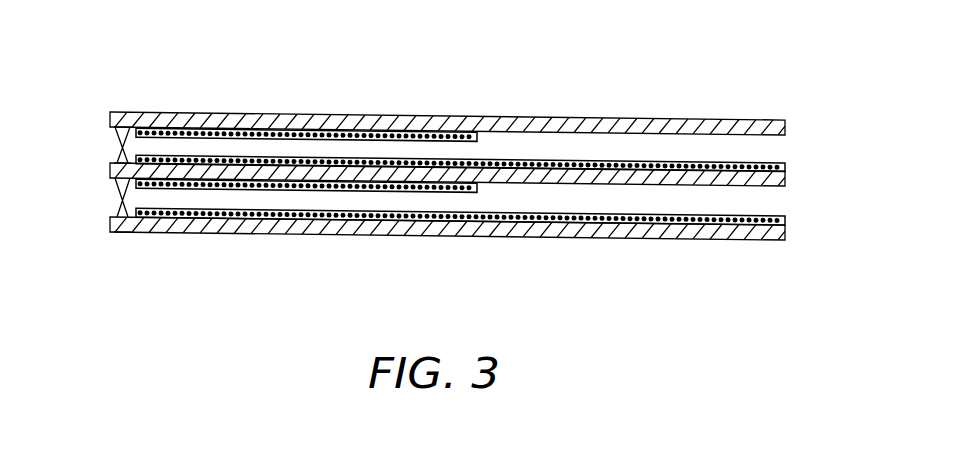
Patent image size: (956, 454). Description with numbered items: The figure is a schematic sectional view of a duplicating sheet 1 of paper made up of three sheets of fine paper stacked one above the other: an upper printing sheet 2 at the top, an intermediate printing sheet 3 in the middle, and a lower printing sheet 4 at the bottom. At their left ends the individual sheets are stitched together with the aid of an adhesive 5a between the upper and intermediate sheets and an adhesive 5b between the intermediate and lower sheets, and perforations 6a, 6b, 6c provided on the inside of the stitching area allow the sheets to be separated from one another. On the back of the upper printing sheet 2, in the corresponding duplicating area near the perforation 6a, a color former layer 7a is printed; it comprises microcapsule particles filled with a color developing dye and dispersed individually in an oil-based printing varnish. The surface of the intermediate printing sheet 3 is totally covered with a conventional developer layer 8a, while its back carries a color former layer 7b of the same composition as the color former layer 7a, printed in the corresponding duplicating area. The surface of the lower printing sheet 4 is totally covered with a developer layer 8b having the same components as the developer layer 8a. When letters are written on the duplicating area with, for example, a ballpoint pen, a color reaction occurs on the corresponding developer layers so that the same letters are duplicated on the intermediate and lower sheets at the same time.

The duplicating sheet 1 is at (327, 90).
The upper printing sheet 2 is at (398, 115).
The intermediate printing sheet 3 is at (567, 177).
The lower printing sheet 4 is at (455, 228).
The adhesive 5a is at (117, 138).
The adhesive 5b is at (117, 201).
The perforation 6a is at (127, 127).
The perforation 6b is at (117, 151).
The perforation 6c is at (120, 232).
The color former layer 7a is at (242, 130).
The color former layer 7b is at (183, 182).
The developer layer 8a is at (514, 161).
The developer layer 8b is at (270, 212).